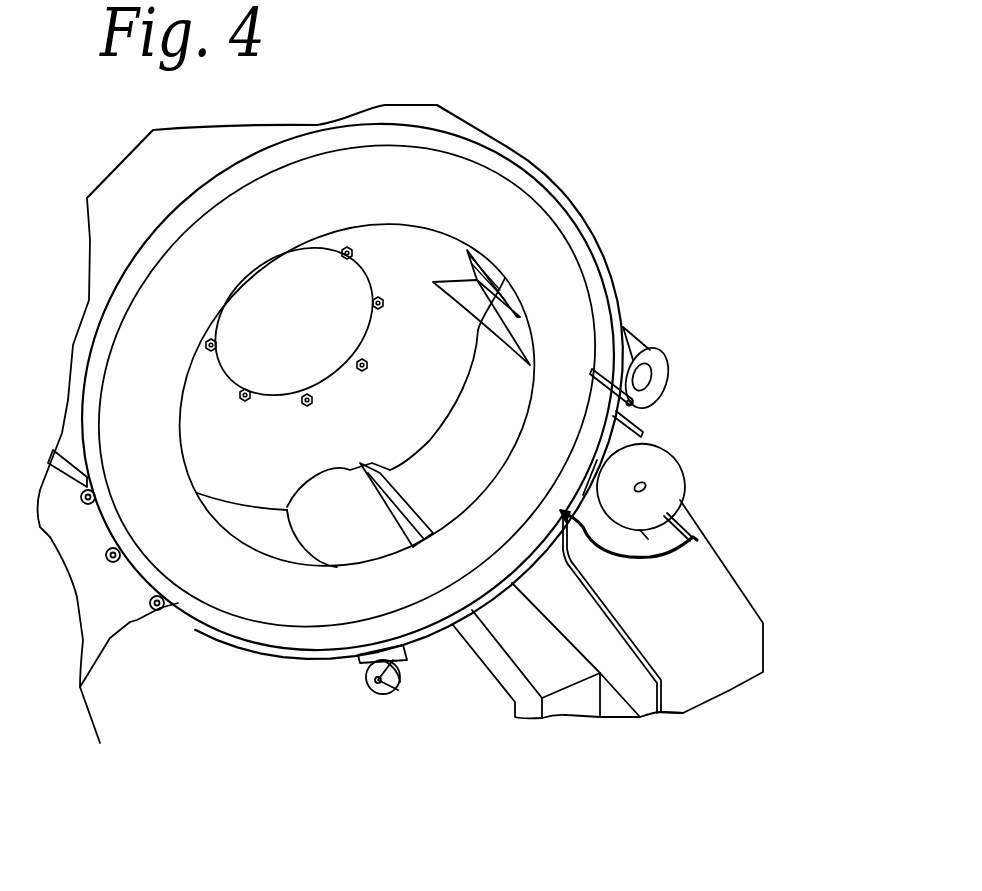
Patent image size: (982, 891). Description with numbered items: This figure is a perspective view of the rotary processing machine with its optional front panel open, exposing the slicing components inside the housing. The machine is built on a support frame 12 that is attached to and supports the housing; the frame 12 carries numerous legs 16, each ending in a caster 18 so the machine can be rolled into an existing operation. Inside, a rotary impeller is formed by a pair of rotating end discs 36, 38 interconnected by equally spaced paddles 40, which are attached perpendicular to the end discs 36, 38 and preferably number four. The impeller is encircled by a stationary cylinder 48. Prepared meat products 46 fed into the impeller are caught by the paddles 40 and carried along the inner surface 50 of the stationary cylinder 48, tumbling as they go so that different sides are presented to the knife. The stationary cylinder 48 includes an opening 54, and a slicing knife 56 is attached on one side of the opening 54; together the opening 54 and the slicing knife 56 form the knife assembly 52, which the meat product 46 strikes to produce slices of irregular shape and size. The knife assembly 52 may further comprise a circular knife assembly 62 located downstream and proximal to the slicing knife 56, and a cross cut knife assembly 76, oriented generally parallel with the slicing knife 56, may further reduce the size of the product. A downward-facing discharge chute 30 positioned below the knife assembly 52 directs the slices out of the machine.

The support frame 12 is at (497, 690).
The legs 16 is at (585, 715).
The casters 18 is at (385, 697).
The discharge chute 30 is at (730, 690).
The rotating end disc 36 is at (300, 607).
The rotating end disc 38 is at (270, 473).
The paddles 40 is at (448, 493).
The prepared meat products 46 is at (315, 527).
The stationary cylinder 48 is at (323, 650).
The inner surface 50 is at (237, 513).
The knife assembly 52 is at (745, 325).
The opening 54 is at (488, 263).
The slicing knife 56 is at (637, 403).
The circular knife assembly 62 is at (660, 350).
The cross cut knife assembly 76 is at (678, 500).